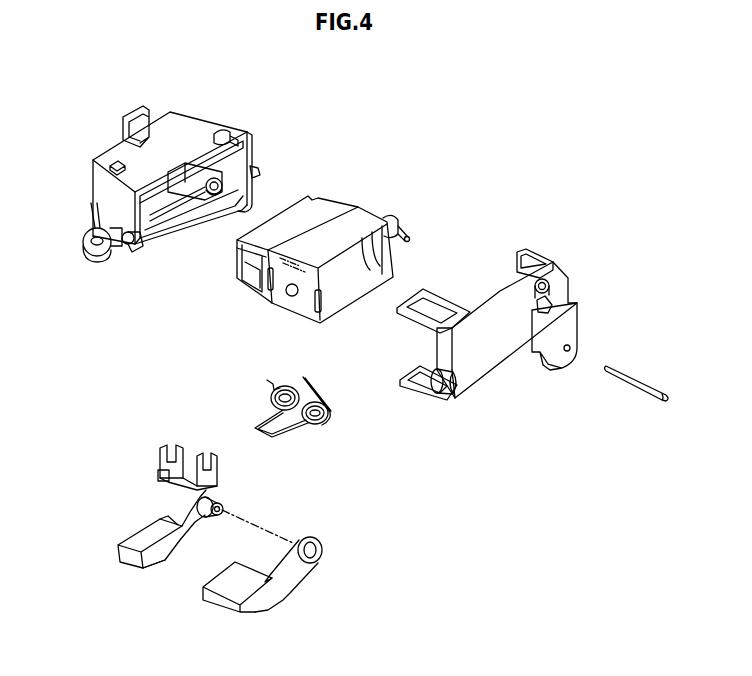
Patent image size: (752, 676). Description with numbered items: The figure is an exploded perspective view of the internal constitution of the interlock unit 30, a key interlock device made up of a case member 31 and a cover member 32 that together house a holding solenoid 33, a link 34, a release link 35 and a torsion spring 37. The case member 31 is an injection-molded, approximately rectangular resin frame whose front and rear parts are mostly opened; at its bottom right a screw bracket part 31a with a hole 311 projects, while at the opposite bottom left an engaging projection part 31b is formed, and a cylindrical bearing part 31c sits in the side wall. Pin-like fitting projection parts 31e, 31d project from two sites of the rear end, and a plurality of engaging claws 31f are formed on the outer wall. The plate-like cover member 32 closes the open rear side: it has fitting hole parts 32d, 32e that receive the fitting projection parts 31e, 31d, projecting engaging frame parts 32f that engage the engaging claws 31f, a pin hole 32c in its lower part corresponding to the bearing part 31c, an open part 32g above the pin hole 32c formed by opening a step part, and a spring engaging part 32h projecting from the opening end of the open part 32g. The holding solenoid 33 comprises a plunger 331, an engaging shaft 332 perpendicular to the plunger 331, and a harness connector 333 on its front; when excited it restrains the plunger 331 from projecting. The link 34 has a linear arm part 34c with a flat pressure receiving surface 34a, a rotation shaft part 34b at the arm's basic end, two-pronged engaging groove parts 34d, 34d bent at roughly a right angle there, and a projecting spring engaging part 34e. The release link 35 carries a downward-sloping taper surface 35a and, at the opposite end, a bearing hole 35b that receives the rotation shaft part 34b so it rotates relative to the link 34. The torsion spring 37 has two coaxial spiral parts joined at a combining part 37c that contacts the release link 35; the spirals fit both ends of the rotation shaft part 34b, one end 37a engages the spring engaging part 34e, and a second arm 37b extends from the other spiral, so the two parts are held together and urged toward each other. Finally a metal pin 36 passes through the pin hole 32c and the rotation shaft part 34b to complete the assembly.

The interlock unit 30 is at (471, 123).
The case member 31 is at (208, 111).
The hole 311 is at (93, 240).
The screw bracket part 31a is at (95, 258).
The engaging projection part 31b is at (253, 170).
The bearing part 31c is at (220, 185).
The fitting projection part 31d is at (132, 247).
The fitting projection part 31e is at (252, 132).
The engaging claw 31f is at (113, 167).
The cover member 32 is at (488, 320).
The pin hole 32c is at (568, 347).
The fitting hole part 32d is at (438, 388).
The fitting hole part 32e is at (545, 283).
The engaging frame part 32f is at (430, 293).
The open part 32g is at (573, 300).
The spring engaging part 32h is at (560, 313).
The holding solenoid 33 is at (342, 217).
The plunger 331 is at (387, 220).
The engaging shaft 332 is at (407, 240).
The harness connector 333 is at (238, 275).
The link 34 is at (170, 510).
The pressure receiving surface 34a is at (127, 560).
The rotation shaft part 34b is at (218, 503).
The arm part 34c is at (170, 548).
The engaging groove part 34d is at (172, 440).
The spring engaging part 34e is at (158, 473).
The release link 35 is at (287, 587).
The taper surface 35a is at (223, 603).
The bearing hole 35b is at (318, 545).
The pin 36 is at (633, 383).
The torsion spring 37 is at (328, 420).
The one end 37a is at (267, 380).
The second arm of spring 37b is at (308, 380).
The combining part 37c is at (275, 440).